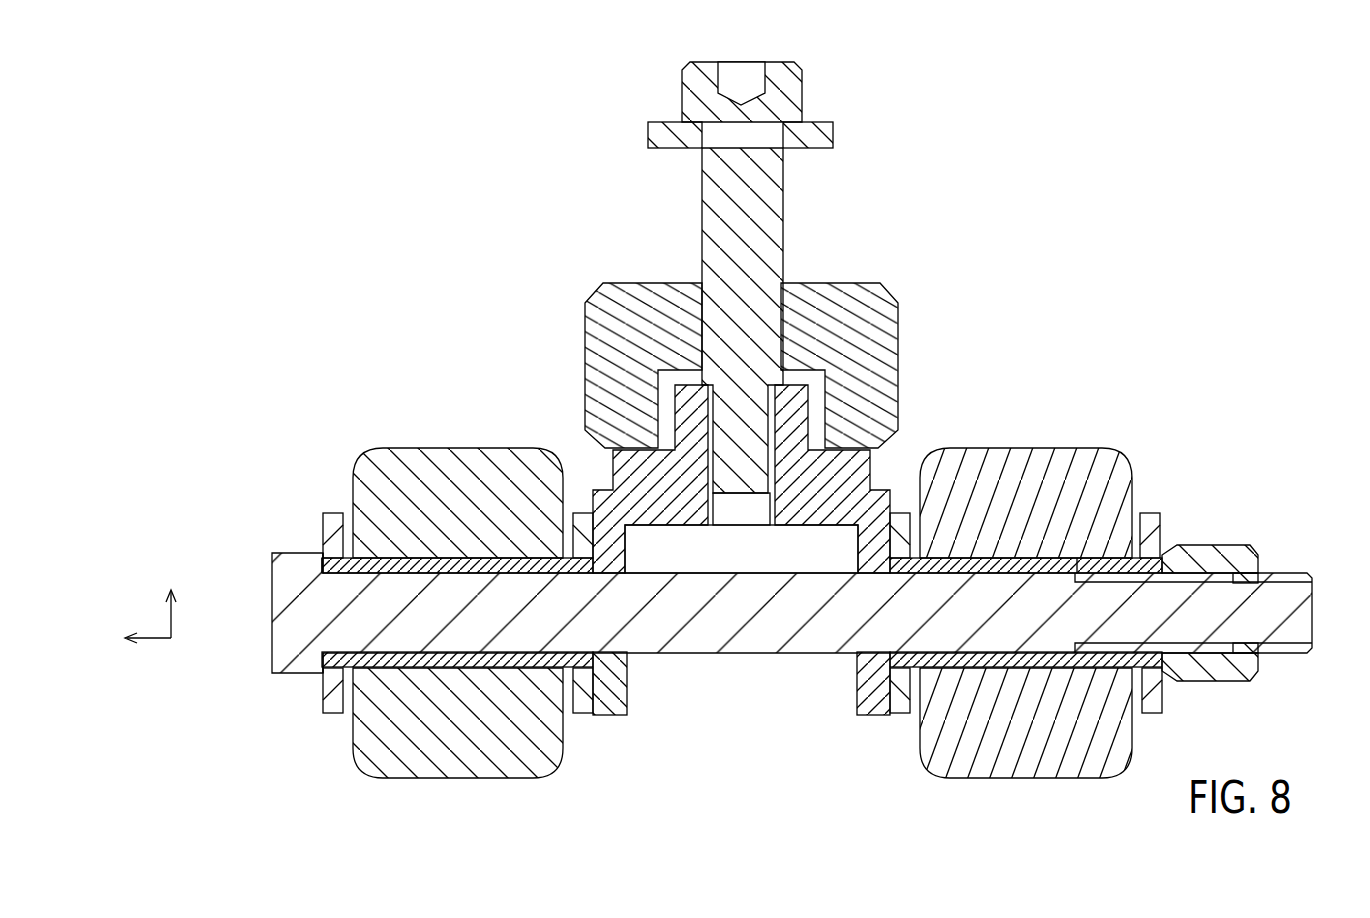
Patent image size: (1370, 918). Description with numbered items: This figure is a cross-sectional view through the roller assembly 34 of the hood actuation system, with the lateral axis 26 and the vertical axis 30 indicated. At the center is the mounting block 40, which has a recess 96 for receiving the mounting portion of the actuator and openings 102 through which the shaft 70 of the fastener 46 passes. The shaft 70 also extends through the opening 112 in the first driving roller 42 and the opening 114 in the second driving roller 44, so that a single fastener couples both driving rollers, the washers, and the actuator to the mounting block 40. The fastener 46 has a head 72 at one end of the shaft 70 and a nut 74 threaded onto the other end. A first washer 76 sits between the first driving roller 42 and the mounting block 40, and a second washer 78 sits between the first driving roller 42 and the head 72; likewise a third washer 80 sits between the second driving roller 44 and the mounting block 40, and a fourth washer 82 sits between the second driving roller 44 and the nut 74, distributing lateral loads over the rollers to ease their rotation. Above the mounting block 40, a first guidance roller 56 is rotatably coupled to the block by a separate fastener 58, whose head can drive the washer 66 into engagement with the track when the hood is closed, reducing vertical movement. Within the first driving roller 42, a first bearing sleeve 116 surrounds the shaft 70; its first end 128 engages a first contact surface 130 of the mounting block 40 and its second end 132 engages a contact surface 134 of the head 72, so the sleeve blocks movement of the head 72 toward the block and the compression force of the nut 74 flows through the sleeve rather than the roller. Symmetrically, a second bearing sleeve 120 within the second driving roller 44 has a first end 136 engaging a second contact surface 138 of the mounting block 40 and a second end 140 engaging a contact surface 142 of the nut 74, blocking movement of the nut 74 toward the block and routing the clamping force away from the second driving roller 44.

The lateral axis 26 is at (150, 638).
The vertical axis 30 is at (171, 617).
The roller assembly 34 is at (1037, 331).
The mounting block 40 is at (610, 715).
The first driving roller 42 is at (457, 448).
The second driving roller 44 is at (1080, 448).
The fastener 46 is at (247, 675).
The first guidance roller 56 is at (598, 292).
The fastener 58 is at (817, 201).
The washer 66 is at (808, 122).
The shaft 70 is at (793, 65).
The head 72 is at (298, 553).
The nut 74 is at (1207, 545).
The first washer 76 is at (587, 513).
The second washer 78 is at (333, 513).
The third washer 80 is at (898, 513).
The fourth washer 82 is at (1152, 712).
The recess 96 is at (857, 683).
The openings 102 is at (617, 596).
The opening 112 is at (487, 574).
The opening 114 is at (998, 578).
The first bearing sleeve 116 is at (478, 665).
The second bearing sleeve 120 is at (1077, 567).
The first end 128 is at (593, 668).
The first contact surface 130 is at (593, 490).
The second end 132 is at (322, 568).
The contact surface 134 is at (322, 672).
The first end 136 is at (872, 490).
The second contact surface 138 is at (898, 713).
The second end 140 is at (1163, 553).
The contact surface 142 is at (1150, 675).